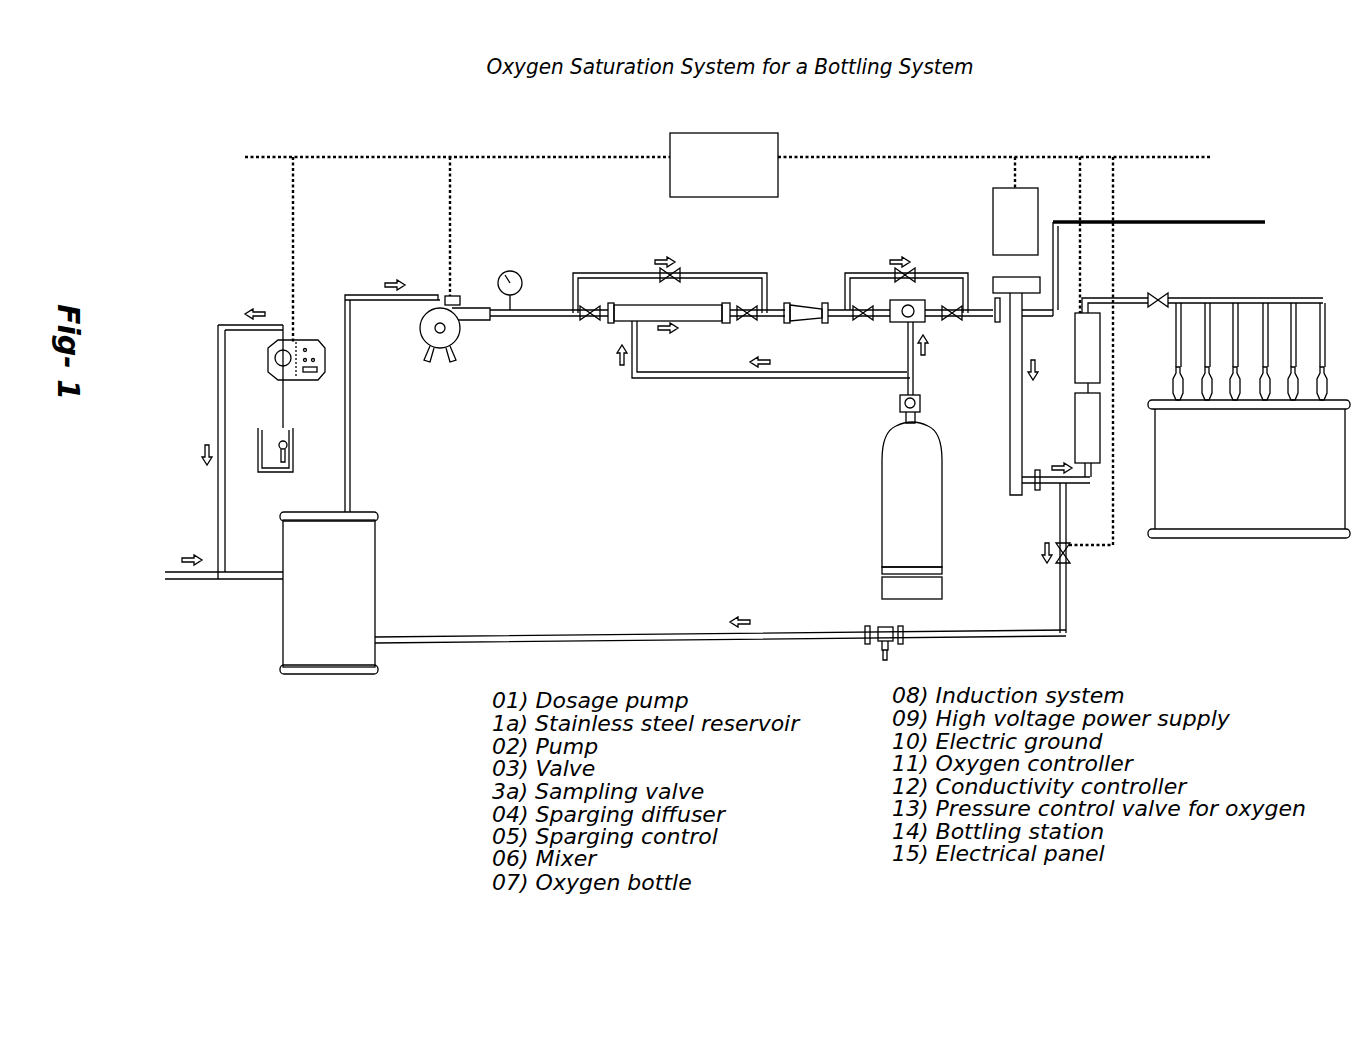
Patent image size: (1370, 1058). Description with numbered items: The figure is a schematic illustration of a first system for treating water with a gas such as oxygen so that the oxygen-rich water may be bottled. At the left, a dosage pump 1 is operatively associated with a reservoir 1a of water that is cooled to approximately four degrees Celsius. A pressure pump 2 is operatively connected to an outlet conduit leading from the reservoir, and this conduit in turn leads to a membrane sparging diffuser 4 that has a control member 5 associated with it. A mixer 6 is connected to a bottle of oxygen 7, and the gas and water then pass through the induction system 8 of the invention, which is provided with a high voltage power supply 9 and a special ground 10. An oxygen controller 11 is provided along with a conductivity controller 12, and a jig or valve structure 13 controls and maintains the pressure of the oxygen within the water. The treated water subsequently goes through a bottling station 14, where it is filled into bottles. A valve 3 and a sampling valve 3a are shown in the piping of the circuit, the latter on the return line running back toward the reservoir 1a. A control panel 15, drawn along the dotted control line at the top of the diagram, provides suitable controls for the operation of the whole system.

The dosage pump 1 is at (262, 437).
The reservoir 1a is at (312, 585).
The pressure pump 2 is at (438, 343).
The Valve 3 is at (1072, 560).
The Sampling valve 3a is at (880, 630).
The Sparging diffuser 4 is at (623, 312).
The control member 5 is at (797, 313).
The mixer 6 is at (893, 317).
The bottle of oxygen 7 is at (897, 483).
The induction system 8 is at (1013, 406).
The high voltage power supply 9 is at (1025, 213).
The special ground 10 is at (1058, 267).
The oxygen controller 11 is at (1088, 420).
The conductivity controller 12 is at (1087, 360).
The valve structure 13 is at (1167, 297).
The bottling station 14 is at (1325, 330).
The control panel 15 is at (763, 174).